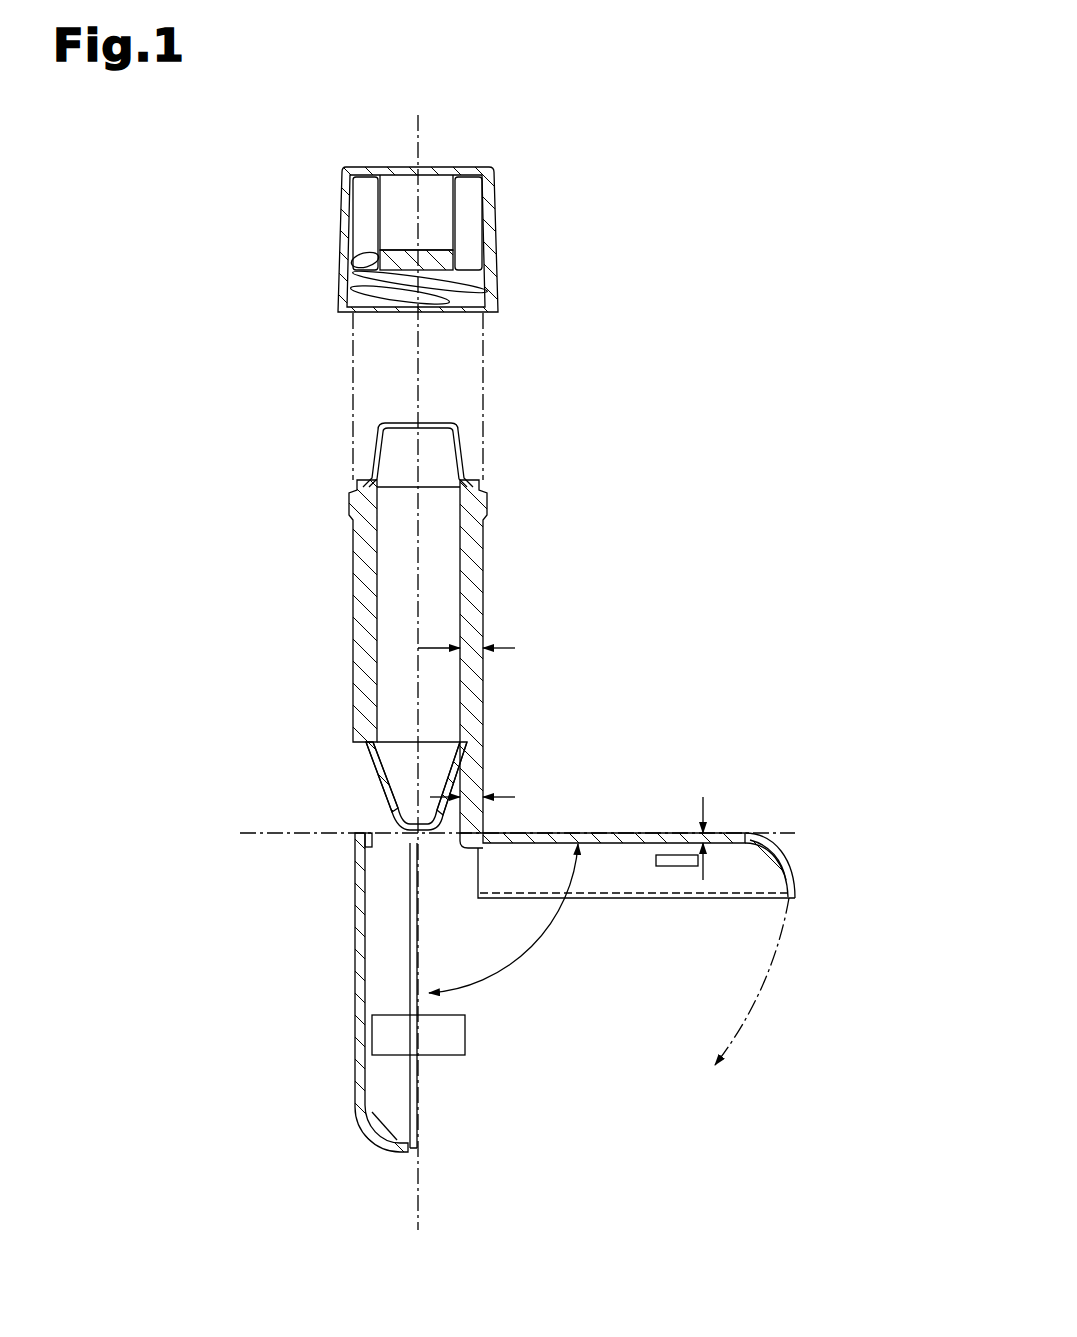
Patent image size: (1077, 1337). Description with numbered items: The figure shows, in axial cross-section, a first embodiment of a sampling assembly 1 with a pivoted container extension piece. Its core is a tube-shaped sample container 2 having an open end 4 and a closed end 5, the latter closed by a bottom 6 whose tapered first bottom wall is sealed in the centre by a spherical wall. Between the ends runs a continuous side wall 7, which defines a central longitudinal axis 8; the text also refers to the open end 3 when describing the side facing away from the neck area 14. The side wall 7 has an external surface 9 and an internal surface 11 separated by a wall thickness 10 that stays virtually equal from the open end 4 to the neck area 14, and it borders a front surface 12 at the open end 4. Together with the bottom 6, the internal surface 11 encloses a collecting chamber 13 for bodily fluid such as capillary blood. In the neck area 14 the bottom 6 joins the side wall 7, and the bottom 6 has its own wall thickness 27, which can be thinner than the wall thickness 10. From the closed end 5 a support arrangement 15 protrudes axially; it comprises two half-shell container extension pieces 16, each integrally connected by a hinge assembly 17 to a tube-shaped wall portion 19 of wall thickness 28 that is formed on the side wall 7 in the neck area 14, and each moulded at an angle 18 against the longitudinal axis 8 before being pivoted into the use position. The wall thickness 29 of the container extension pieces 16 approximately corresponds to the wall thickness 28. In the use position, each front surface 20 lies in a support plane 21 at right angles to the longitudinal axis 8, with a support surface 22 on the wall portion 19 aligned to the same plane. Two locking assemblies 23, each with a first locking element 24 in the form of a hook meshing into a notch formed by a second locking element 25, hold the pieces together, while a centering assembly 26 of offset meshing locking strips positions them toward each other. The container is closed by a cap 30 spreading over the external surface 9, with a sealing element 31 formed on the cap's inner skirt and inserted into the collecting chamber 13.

The sampling assembly 1 is at (705, 122).
The sample container 2 is at (519, 793).
The open end 3 is at (501, 240).
The open end 4 is at (477, 467).
The closed end 5 is at (450, 845).
The bottom 6 is at (385, 813).
The side wall 7 is at (474, 563).
The longitudinal axis 8 is at (418, 137).
The external surface 9 is at (485, 597).
The wall thickness 10 is at (508, 640).
The internal surface 11 is at (458, 605).
The front surface 12 is at (362, 470).
The collecting chamber 13 is at (406, 543).
The neck area 14 is at (347, 748).
The support arrangement 15 is at (604, 955).
The container extension piece 16 is at (356, 1000).
The hinge assembly 17 is at (487, 833).
The angle 18 is at (535, 947).
The wall portion 19 is at (475, 777).
The front surface 20 is at (358, 831).
The support plane 21 is at (256, 832).
The support surface 22 is at (358, 845).
The locking assembly 23 is at (468, 1068).
The first locking element 24 is at (456, 1032).
The second locking element 25 is at (674, 867).
The centering assembly 26 is at (797, 904).
The wall thickness 27 is at (421, 770).
The wall thickness 28 is at (515, 797).
The wall thickness 29 is at (706, 800).
The cap 30 is at (423, 170).
The sealing element 31 is at (385, 262).